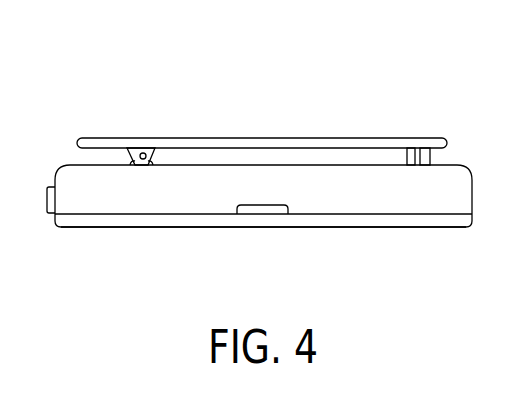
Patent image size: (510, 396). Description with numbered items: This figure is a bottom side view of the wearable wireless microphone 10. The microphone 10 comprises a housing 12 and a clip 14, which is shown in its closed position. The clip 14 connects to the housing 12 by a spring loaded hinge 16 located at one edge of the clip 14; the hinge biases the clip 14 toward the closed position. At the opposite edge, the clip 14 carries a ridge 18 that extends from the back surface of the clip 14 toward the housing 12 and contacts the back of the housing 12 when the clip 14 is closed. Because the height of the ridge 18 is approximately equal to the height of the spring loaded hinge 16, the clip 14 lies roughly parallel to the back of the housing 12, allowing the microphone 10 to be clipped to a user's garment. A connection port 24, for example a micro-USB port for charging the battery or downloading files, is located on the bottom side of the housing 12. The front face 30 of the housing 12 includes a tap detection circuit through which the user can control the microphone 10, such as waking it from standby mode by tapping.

The microphone 10 is at (384, 95).
The housing 12 is at (117, 200).
The clip 14 is at (262, 138).
The spring loaded hinge 16 is at (143, 153).
The ridge 18 is at (422, 150).
The connection port 24 is at (262, 213).
The front face 30 is at (383, 229).